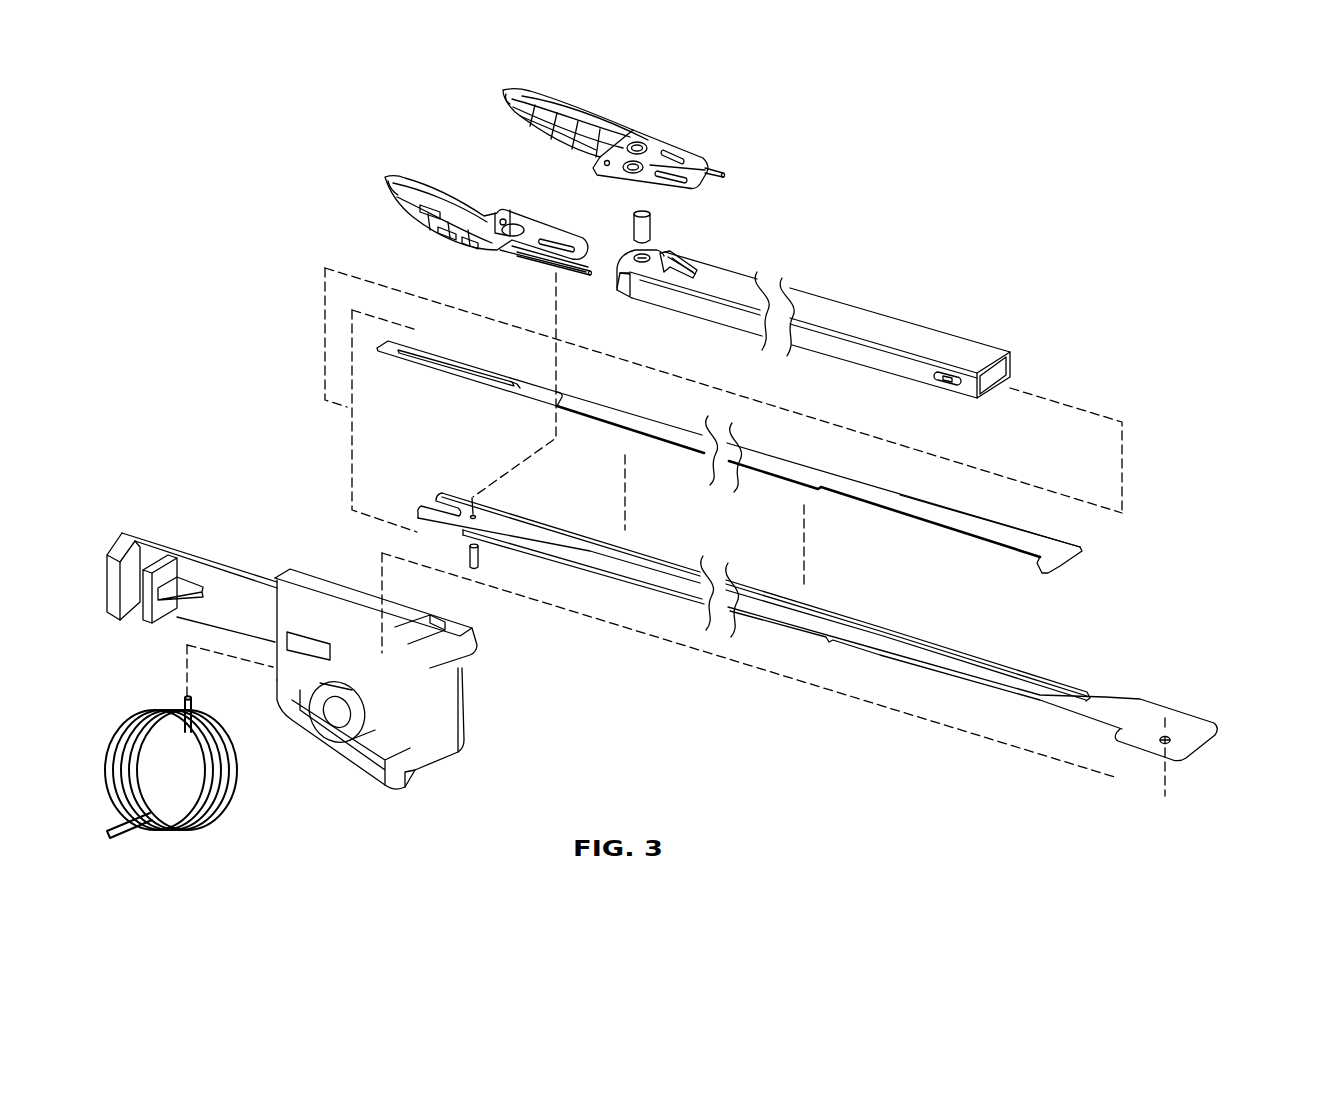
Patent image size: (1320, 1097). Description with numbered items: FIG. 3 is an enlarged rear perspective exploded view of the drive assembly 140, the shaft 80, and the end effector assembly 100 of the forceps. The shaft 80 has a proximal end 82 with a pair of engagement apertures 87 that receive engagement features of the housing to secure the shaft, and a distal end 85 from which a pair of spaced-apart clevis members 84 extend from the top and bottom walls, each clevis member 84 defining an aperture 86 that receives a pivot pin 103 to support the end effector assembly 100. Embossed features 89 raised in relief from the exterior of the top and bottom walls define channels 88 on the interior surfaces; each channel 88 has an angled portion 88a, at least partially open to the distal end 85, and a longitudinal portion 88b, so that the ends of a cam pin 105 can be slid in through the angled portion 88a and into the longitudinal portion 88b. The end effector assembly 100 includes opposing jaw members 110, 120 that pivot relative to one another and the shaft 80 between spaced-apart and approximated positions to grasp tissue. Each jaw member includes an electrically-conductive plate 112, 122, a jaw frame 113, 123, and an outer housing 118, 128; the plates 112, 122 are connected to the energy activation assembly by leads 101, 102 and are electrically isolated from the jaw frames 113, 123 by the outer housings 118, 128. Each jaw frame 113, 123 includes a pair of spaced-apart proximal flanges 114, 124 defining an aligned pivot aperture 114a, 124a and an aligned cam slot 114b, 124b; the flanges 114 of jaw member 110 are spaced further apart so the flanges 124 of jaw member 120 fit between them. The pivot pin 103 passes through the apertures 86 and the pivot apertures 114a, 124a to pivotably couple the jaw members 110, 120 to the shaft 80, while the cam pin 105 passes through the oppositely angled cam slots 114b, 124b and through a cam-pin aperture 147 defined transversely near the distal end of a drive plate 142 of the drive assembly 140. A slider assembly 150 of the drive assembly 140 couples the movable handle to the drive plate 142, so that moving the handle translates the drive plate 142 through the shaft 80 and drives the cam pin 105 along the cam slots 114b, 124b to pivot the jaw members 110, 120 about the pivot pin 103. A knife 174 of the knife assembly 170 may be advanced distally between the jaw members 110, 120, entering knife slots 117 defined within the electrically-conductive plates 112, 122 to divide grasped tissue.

The end effector assembly 100 is at (463, 60).
The jaw member 110 is at (562, 108).
The knife slot 117 is at (546, 112).
The electrically-conductive plate 112 is at (537, 130).
The outer housing 118 is at (593, 122).
The jaw frame 113 is at (640, 147).
The lead 101 is at (724, 180).
The proximal flanges 114 is at (715, 167).
The pivot aperture 114a is at (672, 161).
The cam slot 114b is at (697, 150).
The jaw member 120 is at (401, 233).
The outer housing 128 is at (417, 185).
The electrically-conductive plate 122 is at (438, 199).
The jaw frame 123 is at (500, 222).
The proximal flanges 124 is at (520, 262).
The pivot aperture 124a is at (517, 228).
The cam slot 124b is at (568, 242).
The lead 102 is at (560, 272).
The pivot pin 103 is at (653, 222).
The shaft 80 is at (853, 318).
The proximal end 82 is at (990, 356).
The engagement apertures 87 is at (938, 386).
The distal end 85 is at (720, 318).
The clevis members 84 is at (621, 281).
The aperture 86 is at (656, 256).
The channels 88 is at (689, 268).
The angled portion 88a is at (637, 275).
The longitudinal portion 88b is at (676, 270).
The embossed features 89 is at (703, 281).
The knife 174 is at (622, 418).
The knife assembly 170 is at (1089, 574).
The drive assembly 140 is at (1232, 633).
The drive plate 142 is at (978, 674).
The cam-pin aperture 147 is at (478, 515).
The cam pin 105 is at (482, 566).
The slider assembly 150 is at (473, 777).